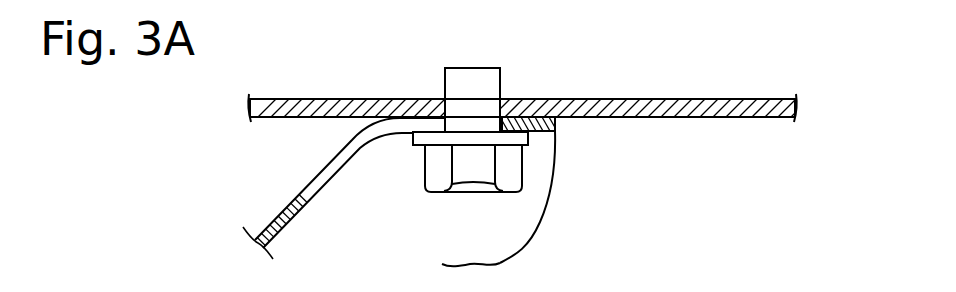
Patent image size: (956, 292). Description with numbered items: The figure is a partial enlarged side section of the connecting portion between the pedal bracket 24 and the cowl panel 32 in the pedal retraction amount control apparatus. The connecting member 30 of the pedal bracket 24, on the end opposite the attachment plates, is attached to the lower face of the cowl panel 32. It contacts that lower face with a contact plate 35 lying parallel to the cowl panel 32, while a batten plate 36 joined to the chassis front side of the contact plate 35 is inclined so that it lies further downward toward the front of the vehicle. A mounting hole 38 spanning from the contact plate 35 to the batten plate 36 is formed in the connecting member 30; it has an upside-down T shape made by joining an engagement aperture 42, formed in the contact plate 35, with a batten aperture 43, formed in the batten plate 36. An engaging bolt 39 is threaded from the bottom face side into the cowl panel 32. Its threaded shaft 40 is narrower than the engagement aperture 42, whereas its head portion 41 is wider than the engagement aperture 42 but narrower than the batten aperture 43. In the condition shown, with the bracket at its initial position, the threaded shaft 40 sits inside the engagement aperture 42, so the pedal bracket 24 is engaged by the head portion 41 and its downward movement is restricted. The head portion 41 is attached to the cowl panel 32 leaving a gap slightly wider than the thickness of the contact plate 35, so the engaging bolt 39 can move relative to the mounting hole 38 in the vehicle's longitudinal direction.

The pedal bracket 24 is at (528, 233).
The connecting member 30 is at (527, 205).
The cowl panel 32 is at (718, 99).
The contact plate 35 is at (546, 132).
The batten plate 36 is at (345, 164).
The mounting hole 38 is at (350, 141).
The engaging bolt 39 is at (502, 68).
The threaded shaft 40 is at (445, 88).
The head portion 41 is at (427, 170).
The engagement aperture 42 is at (493, 123).
The batten aperture 43 is at (311, 182).